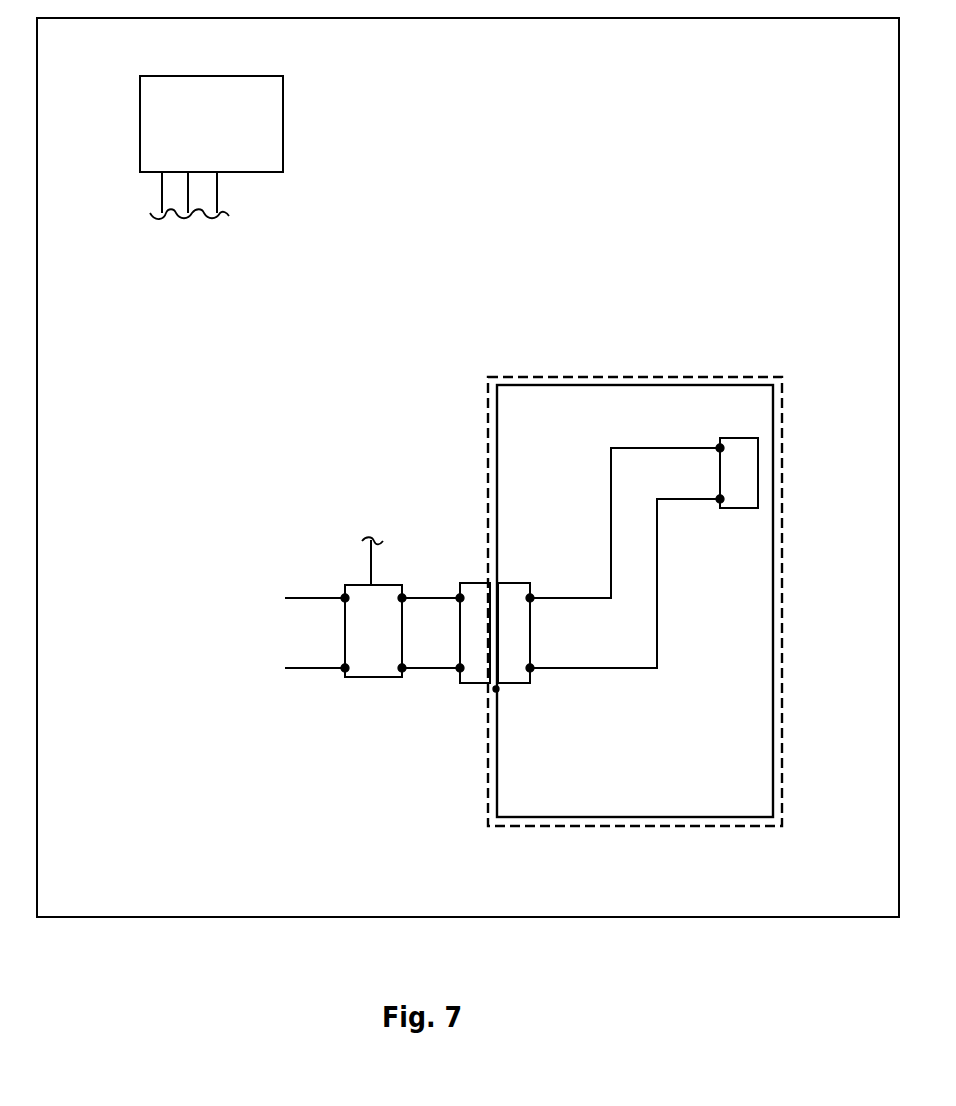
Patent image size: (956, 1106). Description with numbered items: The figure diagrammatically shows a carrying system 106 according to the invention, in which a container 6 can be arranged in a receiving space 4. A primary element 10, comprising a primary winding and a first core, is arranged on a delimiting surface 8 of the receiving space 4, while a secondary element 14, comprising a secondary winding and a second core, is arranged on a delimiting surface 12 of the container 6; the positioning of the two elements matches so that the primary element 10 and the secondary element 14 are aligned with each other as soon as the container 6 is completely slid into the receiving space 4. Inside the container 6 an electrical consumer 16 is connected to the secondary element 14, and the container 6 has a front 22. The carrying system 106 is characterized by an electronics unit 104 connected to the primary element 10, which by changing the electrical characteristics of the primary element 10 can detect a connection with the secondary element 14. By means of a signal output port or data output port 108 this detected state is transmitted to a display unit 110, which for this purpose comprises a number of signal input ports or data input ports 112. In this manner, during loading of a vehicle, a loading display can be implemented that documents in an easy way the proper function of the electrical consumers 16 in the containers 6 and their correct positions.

The receiving space 4 is at (492, 807).
The container 6 is at (758, 773).
The delimiting surface 8 is at (496, 691).
The primary element 10 is at (472, 588).
The delimiting surface 12 is at (504, 577).
The secondary element 14 is at (508, 677).
The electrical consumer 16 is at (740, 470).
The front 22 is at (776, 611).
The electronics unit 104 is at (378, 662).
The carrying system 106 is at (433, 345).
The signal output port or data output port 108 is at (369, 551).
The display unit 110 is at (255, 107).
The signal input ports or data input ports 112 is at (160, 202).